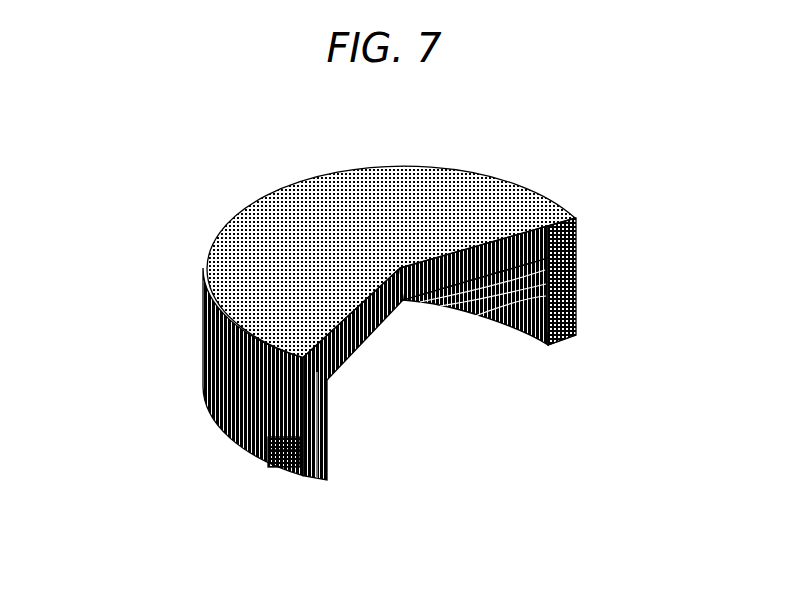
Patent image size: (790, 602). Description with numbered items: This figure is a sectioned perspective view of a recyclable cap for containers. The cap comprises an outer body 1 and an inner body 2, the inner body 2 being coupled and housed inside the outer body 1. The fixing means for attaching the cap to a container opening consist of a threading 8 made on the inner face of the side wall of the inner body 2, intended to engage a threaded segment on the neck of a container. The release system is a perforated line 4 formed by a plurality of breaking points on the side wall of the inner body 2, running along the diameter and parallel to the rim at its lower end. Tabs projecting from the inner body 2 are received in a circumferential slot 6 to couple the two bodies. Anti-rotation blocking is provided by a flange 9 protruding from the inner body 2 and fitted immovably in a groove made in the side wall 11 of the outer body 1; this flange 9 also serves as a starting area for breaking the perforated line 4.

The outer body 1 is at (287, 258).
The inner body 2 is at (385, 323).
The perforated line 4 is at (512, 327).
The circumferential slot 6 is at (577, 335).
The threading 8 is at (578, 290).
The flange 9 is at (273, 465).
The side wall 11 is at (223, 410).